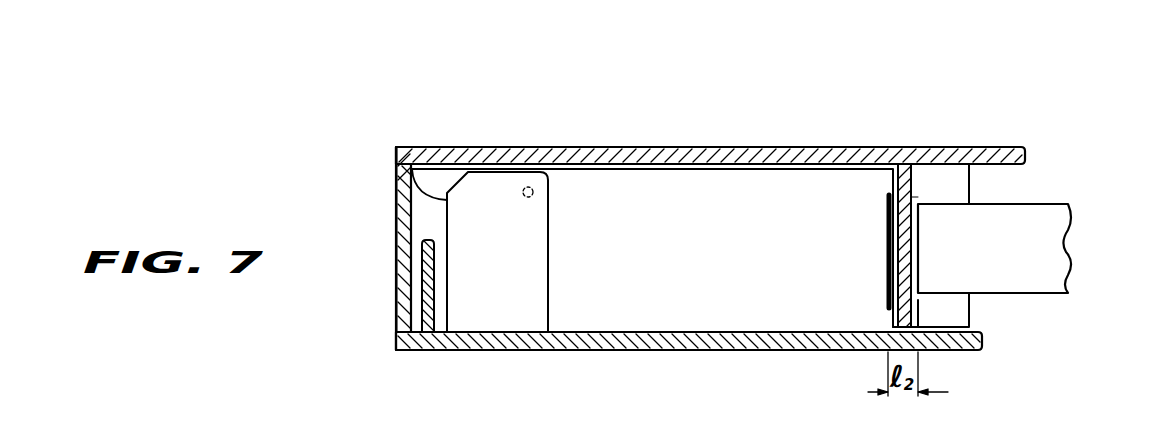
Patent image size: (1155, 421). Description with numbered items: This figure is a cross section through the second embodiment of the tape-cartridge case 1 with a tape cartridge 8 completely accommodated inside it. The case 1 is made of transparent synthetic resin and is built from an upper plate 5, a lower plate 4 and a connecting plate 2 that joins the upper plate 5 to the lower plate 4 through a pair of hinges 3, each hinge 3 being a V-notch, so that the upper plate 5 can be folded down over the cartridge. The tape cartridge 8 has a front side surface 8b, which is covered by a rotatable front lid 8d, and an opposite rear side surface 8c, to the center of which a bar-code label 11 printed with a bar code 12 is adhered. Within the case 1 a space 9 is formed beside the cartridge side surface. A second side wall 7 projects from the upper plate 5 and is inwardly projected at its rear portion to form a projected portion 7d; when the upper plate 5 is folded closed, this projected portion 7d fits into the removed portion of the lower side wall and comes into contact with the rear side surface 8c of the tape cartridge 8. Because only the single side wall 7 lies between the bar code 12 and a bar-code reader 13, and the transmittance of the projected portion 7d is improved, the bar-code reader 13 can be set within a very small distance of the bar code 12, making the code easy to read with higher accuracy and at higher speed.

The tape-cartridge case 1 is at (1058, 118).
The connecting plate 2 is at (396, 240).
The hinge 3 is at (411, 147).
The lower plate 4 is at (661, 351).
The upper plate 5 is at (575, 147).
The second side wall 7 is at (898, 310).
The projected portion 7d is at (911, 203).
The tape cartridge 8 is at (775, 185).
The front side surface 8b is at (397, 165).
The rear side surface 8c is at (912, 168).
The front lid 8d is at (488, 195).
The space 9 is at (442, 310).
The bar-code label 11 is at (911, 197).
The bar code 12 is at (905, 266).
The bar-code reader 13 is at (1048, 220).